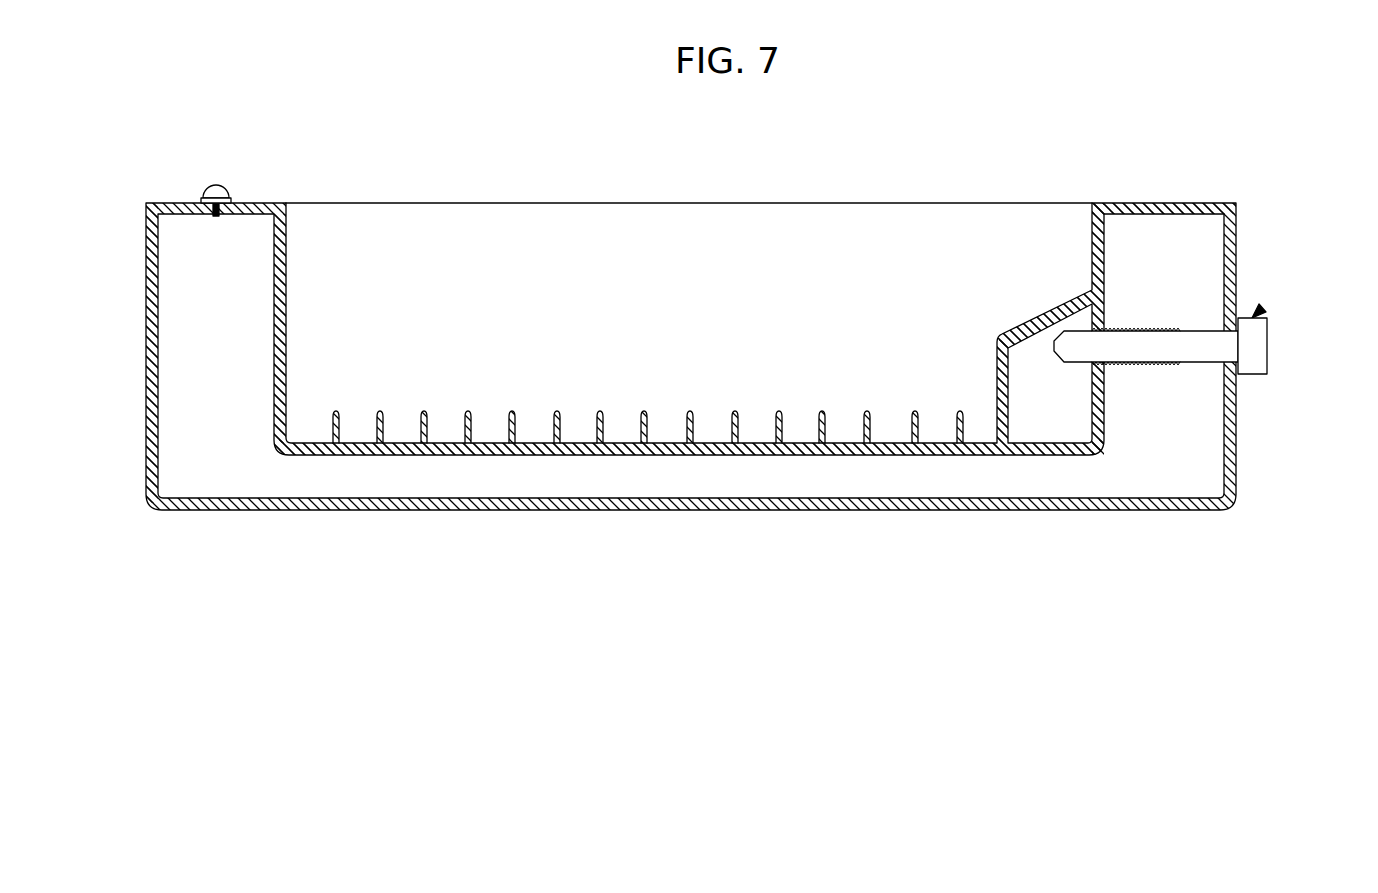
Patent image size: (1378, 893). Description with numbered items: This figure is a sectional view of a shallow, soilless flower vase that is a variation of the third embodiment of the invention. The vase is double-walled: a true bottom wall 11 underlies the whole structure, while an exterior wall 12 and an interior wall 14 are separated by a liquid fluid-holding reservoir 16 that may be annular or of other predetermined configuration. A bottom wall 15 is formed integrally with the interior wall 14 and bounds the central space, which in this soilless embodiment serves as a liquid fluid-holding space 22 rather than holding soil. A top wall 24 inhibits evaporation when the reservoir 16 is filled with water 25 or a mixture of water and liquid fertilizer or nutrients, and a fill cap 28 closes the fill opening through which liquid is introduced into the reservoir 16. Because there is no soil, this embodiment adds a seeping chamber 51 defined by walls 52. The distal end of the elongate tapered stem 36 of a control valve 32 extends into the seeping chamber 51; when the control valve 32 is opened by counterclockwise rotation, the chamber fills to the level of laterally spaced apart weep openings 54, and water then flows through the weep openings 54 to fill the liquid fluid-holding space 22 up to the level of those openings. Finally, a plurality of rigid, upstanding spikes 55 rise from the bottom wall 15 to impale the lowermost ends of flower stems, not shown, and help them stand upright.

The true bottom wall 11 is at (553, 511).
The exterior wall 12 is at (148, 232).
The interior wall 14 is at (288, 258).
The bottom wall 15 is at (727, 456).
The liquid fluid-holding reservoir 16 is at (243, 273).
The soil / liquid fluid-holding space 22 is at (627, 235).
The top wall 24 is at (1147, 202).
The water 25 is at (185, 330).
The fill cap 28 is at (216, 183).
The control valve 32 is at (1262, 308).
The elongate tapered stem 36 is at (1186, 330).
The seeping chamber 51 is at (1060, 437).
The walls 52 is at (1040, 312).
The weep openings 54 is at (998, 370).
The rigid upstanding spikes 55 is at (388, 430).